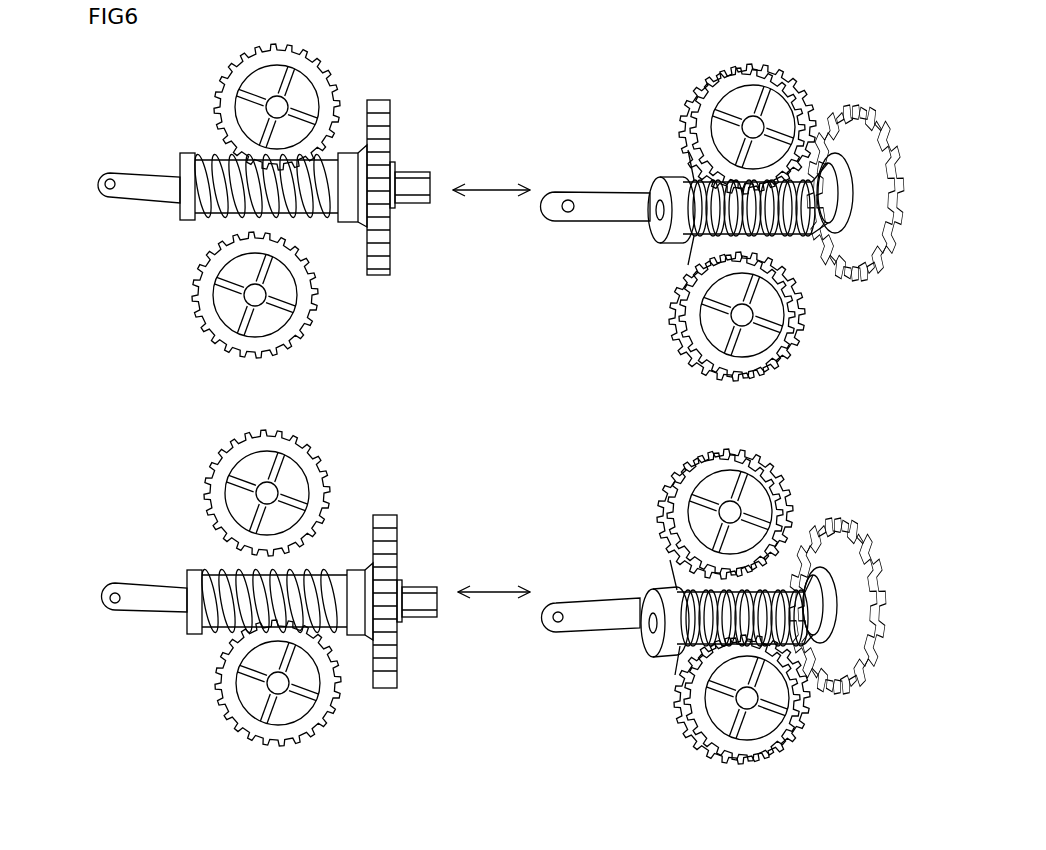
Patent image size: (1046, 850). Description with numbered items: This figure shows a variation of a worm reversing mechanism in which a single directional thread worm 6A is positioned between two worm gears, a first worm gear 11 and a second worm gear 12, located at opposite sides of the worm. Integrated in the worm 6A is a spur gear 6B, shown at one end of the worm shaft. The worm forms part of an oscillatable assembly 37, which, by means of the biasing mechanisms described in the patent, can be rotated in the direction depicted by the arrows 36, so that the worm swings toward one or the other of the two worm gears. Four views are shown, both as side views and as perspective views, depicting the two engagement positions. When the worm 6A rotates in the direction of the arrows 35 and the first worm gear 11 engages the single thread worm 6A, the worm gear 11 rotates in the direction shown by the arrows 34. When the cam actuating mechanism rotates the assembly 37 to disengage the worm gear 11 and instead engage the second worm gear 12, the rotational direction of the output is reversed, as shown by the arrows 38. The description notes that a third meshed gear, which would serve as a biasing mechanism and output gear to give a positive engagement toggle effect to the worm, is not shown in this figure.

The first worm gear 11 is at (330, 88).
The second worm gear 12 is at (300, 313).
The single thread worm 6A is at (202, 220).
The spur gear 6B is at (395, 123).
The arrows 34 is at (338, 52).
The arrows 35 is at (898, 287).
The arrows 36 is at (95, 225).
The oscillatable assembly 37 is at (147, 183).
The arrows 38 is at (187, 747).